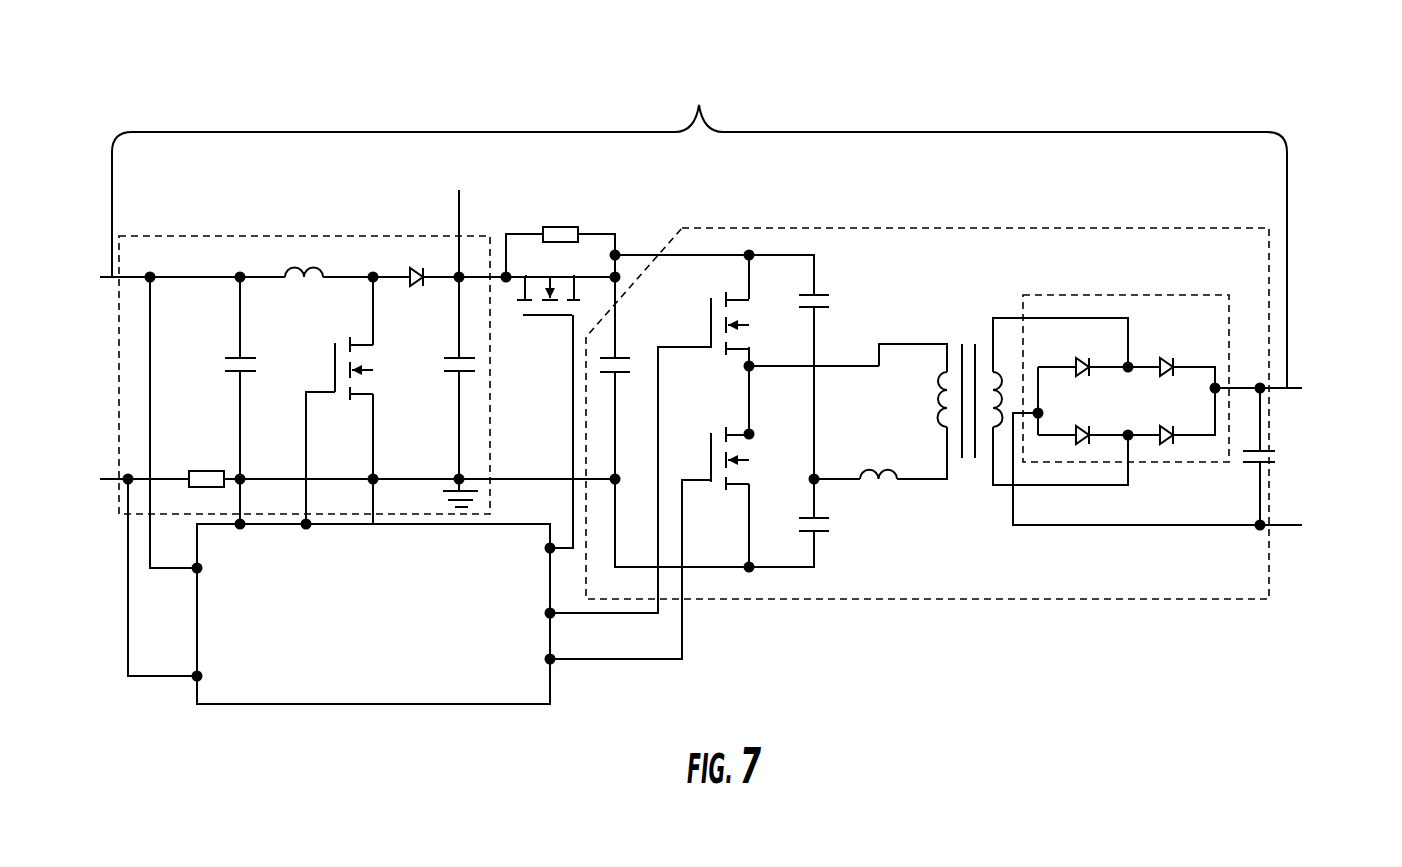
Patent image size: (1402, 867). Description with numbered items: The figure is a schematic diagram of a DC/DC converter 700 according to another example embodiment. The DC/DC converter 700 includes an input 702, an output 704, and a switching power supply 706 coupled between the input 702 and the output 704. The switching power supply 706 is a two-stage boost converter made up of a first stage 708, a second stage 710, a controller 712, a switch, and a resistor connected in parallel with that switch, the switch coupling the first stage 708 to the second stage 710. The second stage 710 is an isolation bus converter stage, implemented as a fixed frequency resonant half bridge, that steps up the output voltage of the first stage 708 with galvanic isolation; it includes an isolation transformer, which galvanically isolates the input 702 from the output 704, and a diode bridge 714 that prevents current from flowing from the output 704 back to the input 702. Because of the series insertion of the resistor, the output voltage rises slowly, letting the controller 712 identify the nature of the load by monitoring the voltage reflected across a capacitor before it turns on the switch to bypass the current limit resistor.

The DC/DC converter 700 is at (262, 88).
The input 702 is at (112, 280).
The output 704 is at (1296, 523).
The switching power supply 706 is at (699, 231).
The first stage 708 is at (300, 236).
The second stage 710 is at (979, 227).
The controller 712 is at (482, 705).
The diode bridge 714 is at (1208, 463).